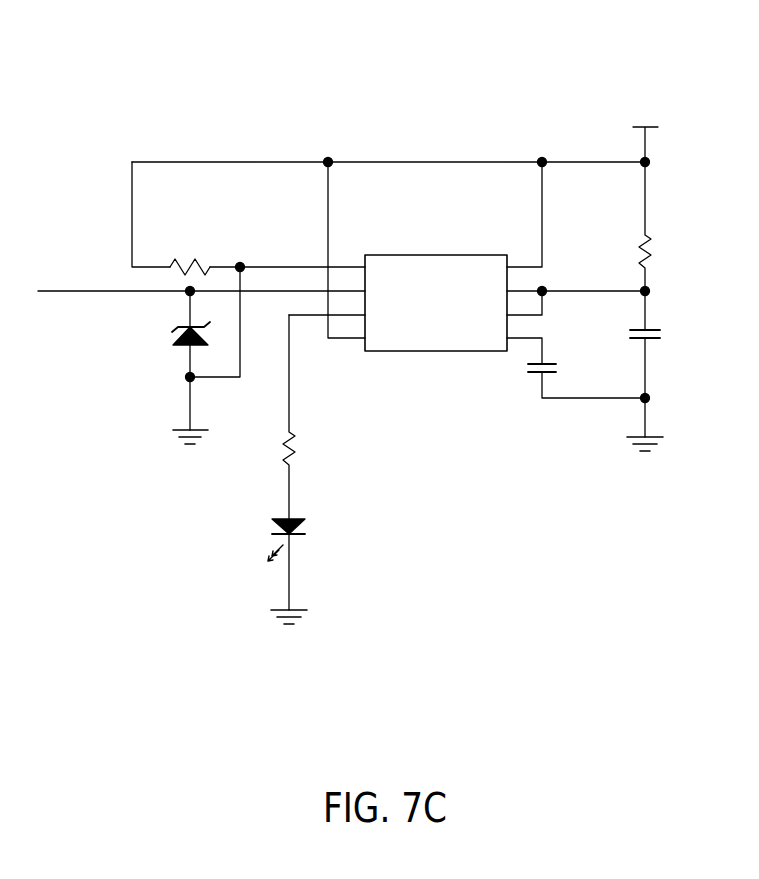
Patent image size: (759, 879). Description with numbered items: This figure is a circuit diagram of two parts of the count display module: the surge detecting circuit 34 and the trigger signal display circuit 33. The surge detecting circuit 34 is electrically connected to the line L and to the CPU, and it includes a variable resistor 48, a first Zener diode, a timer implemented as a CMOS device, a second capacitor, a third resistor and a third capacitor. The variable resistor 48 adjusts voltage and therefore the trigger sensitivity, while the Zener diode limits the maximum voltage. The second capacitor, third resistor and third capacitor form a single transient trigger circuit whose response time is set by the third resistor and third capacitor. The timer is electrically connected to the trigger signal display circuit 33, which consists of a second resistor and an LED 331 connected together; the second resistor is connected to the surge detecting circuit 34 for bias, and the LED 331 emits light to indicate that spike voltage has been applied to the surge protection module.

The surge detecting circuit 34 is at (421, 110).
The variable resistor 48 is at (190, 248).
The trigger signal display circuit 33 is at (422, 438).
The LED 331 is at (330, 563).